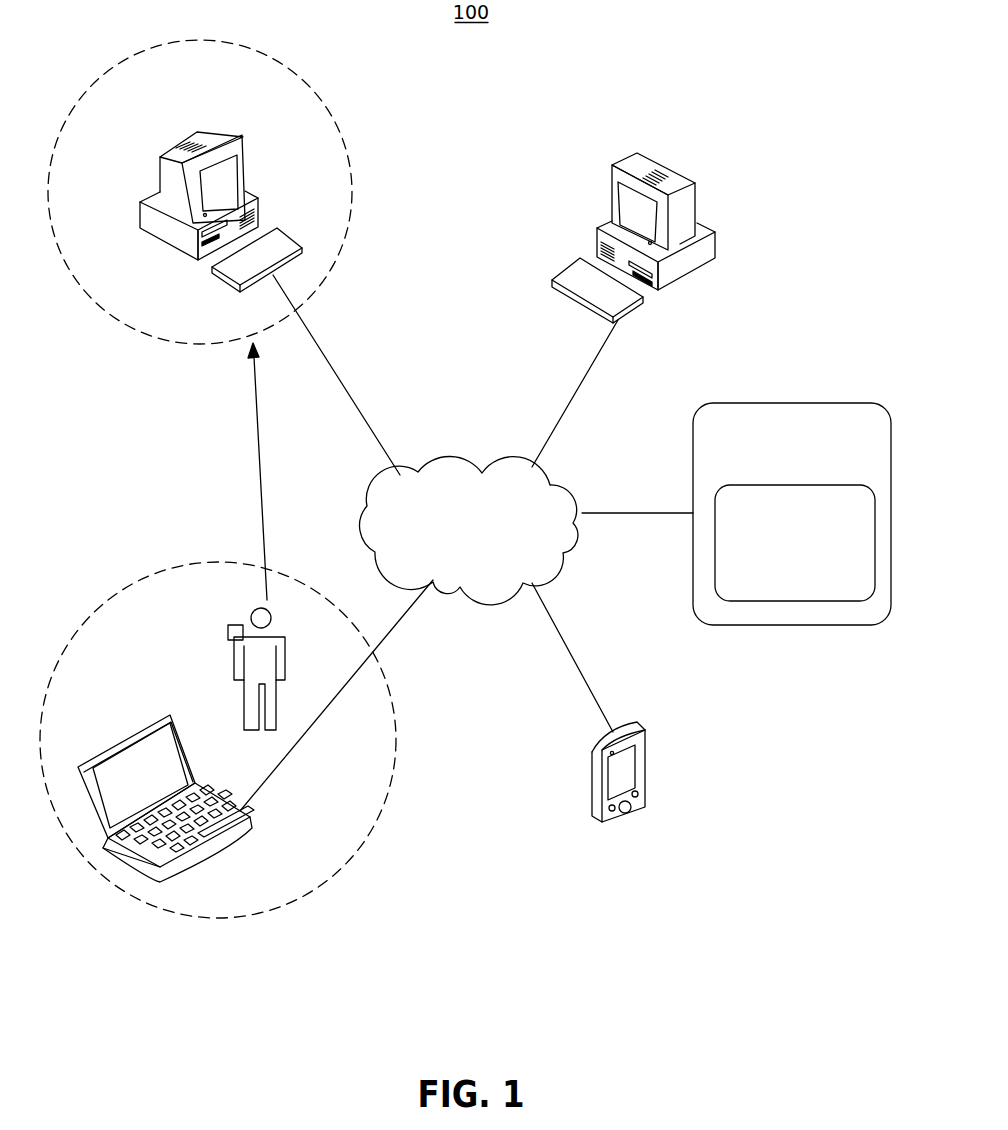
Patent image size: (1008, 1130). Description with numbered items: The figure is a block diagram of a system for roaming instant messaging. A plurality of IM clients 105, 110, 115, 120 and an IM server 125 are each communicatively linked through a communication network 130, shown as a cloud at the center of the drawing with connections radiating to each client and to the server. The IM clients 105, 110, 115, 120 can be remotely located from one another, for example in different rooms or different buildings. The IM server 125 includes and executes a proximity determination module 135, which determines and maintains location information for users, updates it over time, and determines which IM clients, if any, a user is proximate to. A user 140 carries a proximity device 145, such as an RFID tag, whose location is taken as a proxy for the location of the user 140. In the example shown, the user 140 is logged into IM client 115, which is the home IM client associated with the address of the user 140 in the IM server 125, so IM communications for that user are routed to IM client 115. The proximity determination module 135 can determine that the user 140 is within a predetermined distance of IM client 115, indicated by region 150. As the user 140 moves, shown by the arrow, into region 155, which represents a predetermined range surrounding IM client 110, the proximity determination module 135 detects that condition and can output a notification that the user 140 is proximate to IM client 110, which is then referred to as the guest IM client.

The IM client 105 is at (607, 200).
The IM client 110 is at (157, 183).
The IM client 115 is at (188, 753).
The IM client 120 is at (590, 797).
The IM server 125 is at (792, 514).
The communication network 130 is at (469, 530).
The proximity determination module 135 is at (795, 543).
The user 140 is at (287, 655).
The proximity device 145 is at (228, 635).
The region 150 is at (402, 722).
The region 155 is at (348, 148).